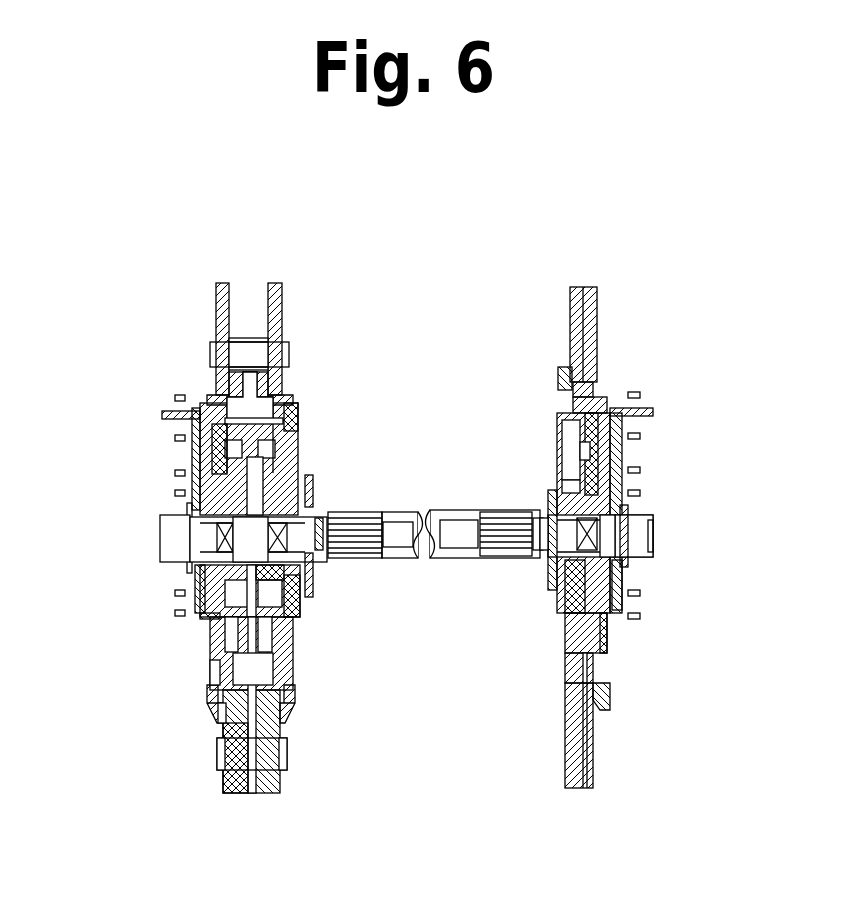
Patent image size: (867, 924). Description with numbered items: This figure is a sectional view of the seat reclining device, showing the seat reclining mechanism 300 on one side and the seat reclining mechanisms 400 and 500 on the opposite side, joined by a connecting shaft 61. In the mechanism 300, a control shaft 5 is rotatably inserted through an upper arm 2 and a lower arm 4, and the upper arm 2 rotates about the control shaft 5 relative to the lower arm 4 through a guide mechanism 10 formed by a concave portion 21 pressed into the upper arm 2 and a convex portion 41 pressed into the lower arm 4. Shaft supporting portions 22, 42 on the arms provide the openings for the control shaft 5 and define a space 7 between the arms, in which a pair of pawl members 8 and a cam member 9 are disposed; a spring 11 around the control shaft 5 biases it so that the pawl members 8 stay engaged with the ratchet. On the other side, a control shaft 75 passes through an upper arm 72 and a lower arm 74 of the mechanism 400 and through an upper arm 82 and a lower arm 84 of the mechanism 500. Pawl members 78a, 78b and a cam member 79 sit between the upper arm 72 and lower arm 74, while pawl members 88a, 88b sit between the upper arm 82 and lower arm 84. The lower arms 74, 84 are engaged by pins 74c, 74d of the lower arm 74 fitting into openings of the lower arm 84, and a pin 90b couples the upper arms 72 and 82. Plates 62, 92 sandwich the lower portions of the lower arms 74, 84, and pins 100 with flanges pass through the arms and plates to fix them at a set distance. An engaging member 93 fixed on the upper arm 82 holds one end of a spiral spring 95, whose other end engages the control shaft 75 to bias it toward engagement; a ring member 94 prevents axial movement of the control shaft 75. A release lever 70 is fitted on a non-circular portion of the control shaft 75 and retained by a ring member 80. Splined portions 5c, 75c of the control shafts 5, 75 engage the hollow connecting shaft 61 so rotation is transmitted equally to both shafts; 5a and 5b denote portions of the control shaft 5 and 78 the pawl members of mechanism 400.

The seat reclining mechanism 500 is at (175, 284).
The seat reclining mechanism 400 is at (305, 284).
The seat reclining mechanism 300 is at (647, 344).
The upper arm 82 is at (218, 283).
The upper arm 72 is at (283, 283).
The pin 90b is at (288, 350).
The release lever 70 is at (275, 436).
The hub body 78 is at (250, 494).
The pawl member 78b is at (298, 428).
The pawl member 78a is at (288, 607).
The cam member 79 is at (284, 577).
The pin 74c is at (222, 410).
The pawl member 88b is at (178, 390).
The engaging member 93 is at (158, 415).
The ring member 94 is at (188, 568).
The spiral spring 95 is at (175, 613).
The pin 74d is at (215, 625).
The control shaft 75 is at (150, 512).
The ring member 80 is at (312, 478).
The splined portion 75c is at (355, 532).
The lower arm 74 is at (265, 795).
The lower arm 84 is at (237, 795).
The plate 62 is at (290, 723).
The pin 100 is at (290, 757).
The pawl member 88a is at (207, 660).
The plate 92 is at (222, 725).
The upper arm 2 is at (590, 342).
The spring 11 is at (642, 396).
The guide mechanism 10 is at (610, 718).
The pawl member 8 is at (586, 432).
The cam member 9 is at (586, 488).
The control shaft 5 is at (640, 530).
The splined portion 5c is at (522, 530).
The spindle flange 5b is at (548, 580).
The spindle shoulder 5a is at (572, 600).
The space 7 is at (626, 560).
The shaft supporting portion 22 is at (616, 622).
The shaft supporting portion 42 is at (580, 665).
The convex portion 41 is at (586, 680).
The lower arm 4 is at (576, 768).
The concave portion 21 is at (605, 690).
The connecting shaft 61 is at (484, 576).